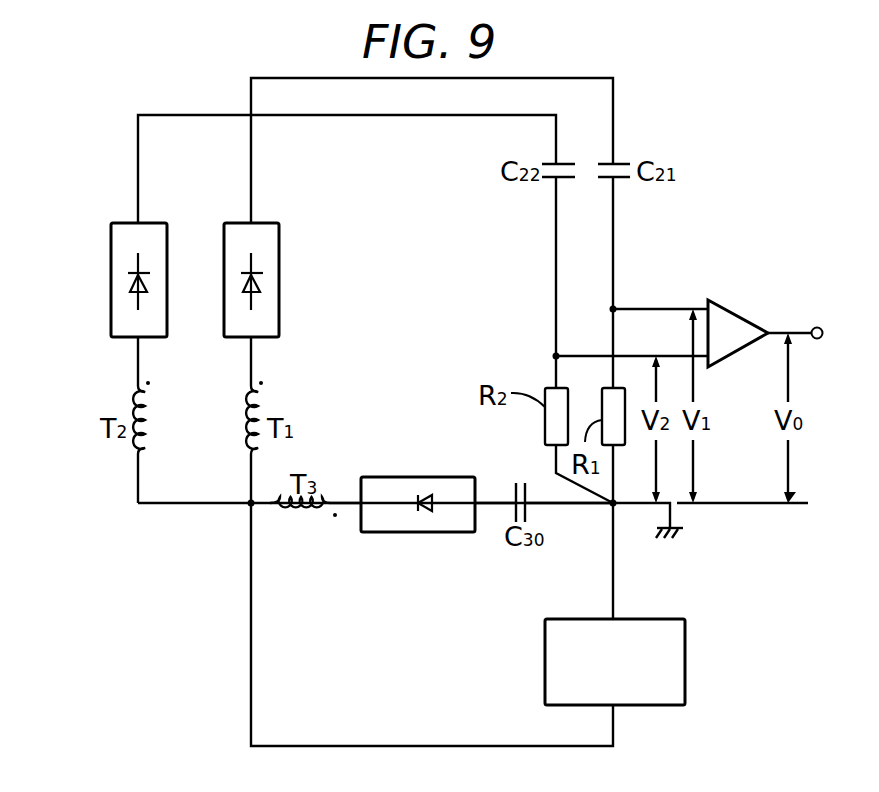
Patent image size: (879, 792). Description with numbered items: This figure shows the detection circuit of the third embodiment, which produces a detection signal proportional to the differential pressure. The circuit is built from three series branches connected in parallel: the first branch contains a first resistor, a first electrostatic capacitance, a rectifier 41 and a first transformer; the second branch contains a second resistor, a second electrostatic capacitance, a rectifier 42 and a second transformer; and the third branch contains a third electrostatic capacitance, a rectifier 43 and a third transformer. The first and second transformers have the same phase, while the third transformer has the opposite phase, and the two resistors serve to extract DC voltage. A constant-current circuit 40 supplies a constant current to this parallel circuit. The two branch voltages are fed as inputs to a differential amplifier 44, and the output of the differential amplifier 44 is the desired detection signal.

The constant-current circuit 40 is at (685, 637).
The rectifier 41 is at (279, 253).
The rectifier 42 is at (111, 253).
The rectifier 43 is at (424, 477).
The differential amplifier 44 is at (737, 313).